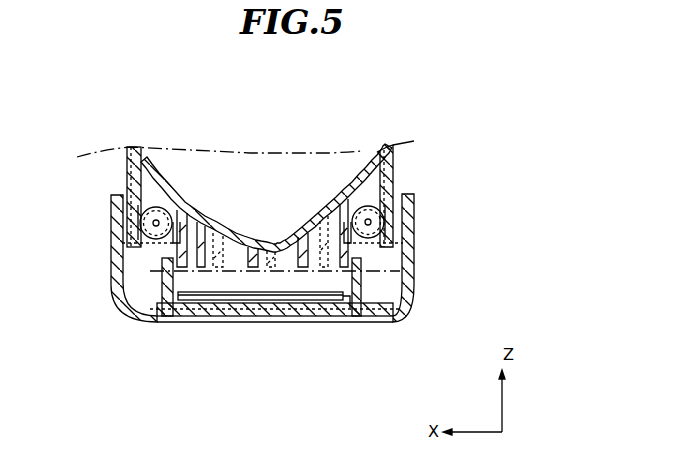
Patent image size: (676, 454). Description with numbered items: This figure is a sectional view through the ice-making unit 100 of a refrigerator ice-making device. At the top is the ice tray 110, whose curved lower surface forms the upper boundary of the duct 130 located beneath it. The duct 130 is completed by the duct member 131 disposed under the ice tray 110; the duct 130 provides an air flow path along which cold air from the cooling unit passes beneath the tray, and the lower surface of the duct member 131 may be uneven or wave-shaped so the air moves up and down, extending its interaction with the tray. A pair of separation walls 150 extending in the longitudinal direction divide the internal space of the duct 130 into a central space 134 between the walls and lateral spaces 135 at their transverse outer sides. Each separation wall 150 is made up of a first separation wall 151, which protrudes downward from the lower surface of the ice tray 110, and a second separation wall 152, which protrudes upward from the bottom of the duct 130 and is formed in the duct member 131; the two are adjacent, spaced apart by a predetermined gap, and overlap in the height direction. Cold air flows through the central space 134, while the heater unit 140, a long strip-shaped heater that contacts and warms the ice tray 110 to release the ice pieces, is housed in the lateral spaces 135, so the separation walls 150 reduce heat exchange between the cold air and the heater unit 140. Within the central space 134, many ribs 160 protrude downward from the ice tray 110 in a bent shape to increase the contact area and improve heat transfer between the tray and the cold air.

The ice-making unit 100 is at (303, 432).
The ice tray 110 is at (217, 242).
The duct 130 is at (269, 298).
The duct member 131 is at (254, 308).
The central space 134 is at (222, 285).
The lateral spaces 135 is at (153, 286).
The heater unit 140 is at (380, 198).
The separation walls 150 is at (484, 233).
The first separation wall 151 is at (352, 250).
The second separation wall 152 is at (381, 283).
The ribs 160 is at (270, 256).